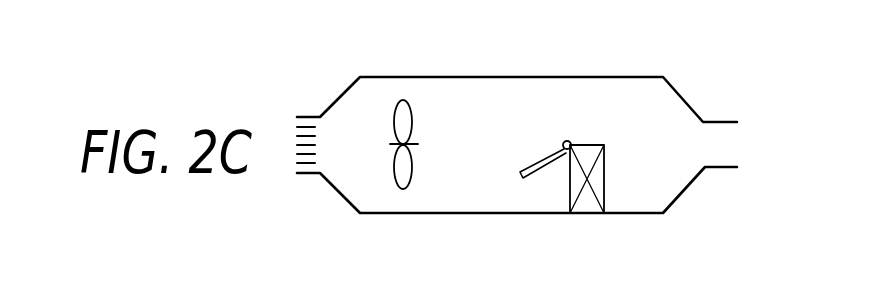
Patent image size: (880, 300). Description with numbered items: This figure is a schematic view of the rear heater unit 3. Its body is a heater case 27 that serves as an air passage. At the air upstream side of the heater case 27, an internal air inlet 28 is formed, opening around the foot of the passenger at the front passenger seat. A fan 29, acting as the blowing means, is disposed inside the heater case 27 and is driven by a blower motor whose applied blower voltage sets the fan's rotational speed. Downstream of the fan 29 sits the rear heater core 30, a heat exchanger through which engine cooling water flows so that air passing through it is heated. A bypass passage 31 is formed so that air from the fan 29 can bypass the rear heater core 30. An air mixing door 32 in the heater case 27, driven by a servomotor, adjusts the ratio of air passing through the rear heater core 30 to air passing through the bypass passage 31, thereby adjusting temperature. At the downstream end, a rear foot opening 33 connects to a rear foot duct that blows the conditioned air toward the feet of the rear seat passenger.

The rear heater unit 3 is at (328, 80).
The heater case 27 is at (518, 77).
The internal air inlet 28 is at (293, 150).
The fan 29 is at (404, 100).
The rear heater core 30 is at (605, 195).
The bypass passage 31 is at (597, 105).
The air mixing door 32 is at (527, 175).
The rear foot opening 33 is at (727, 143).